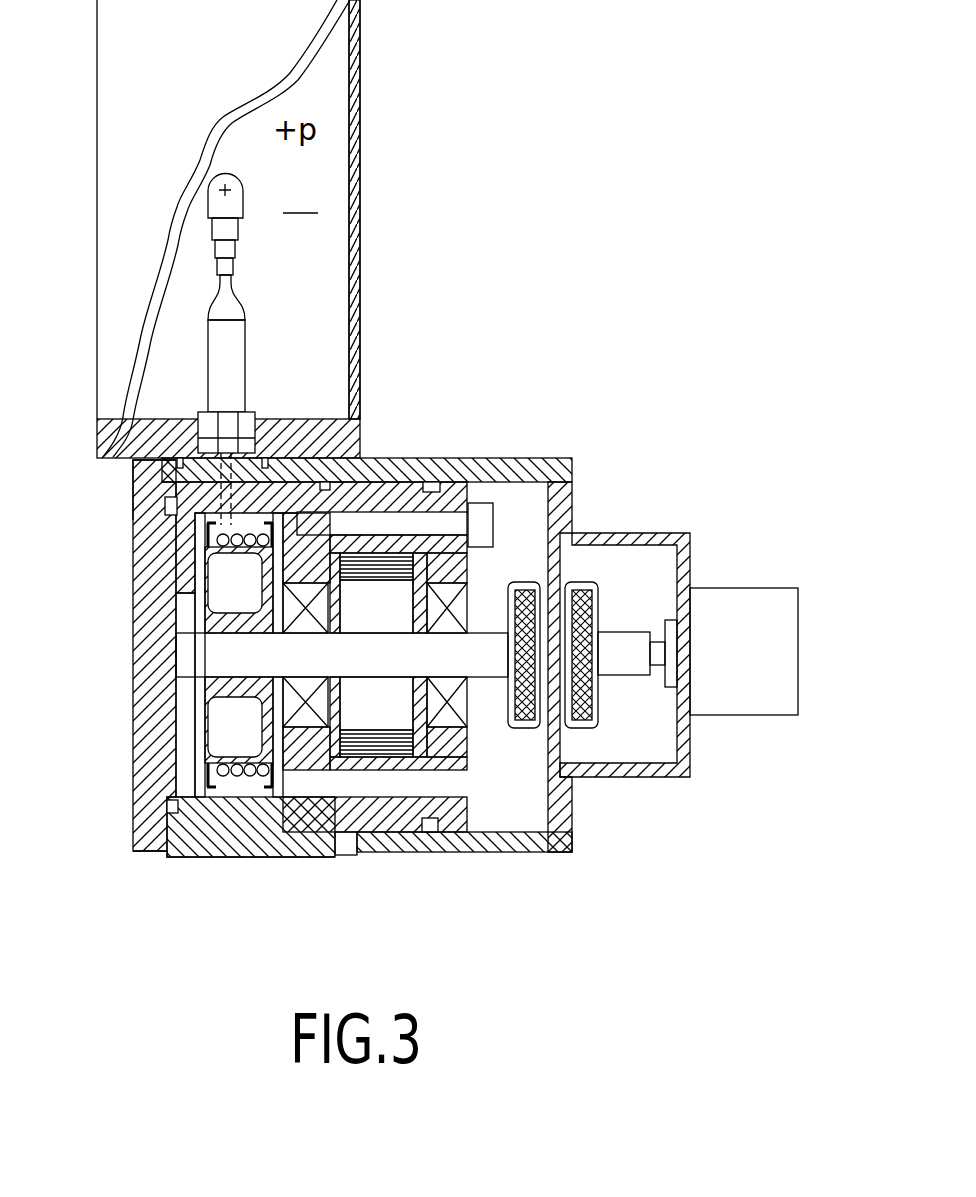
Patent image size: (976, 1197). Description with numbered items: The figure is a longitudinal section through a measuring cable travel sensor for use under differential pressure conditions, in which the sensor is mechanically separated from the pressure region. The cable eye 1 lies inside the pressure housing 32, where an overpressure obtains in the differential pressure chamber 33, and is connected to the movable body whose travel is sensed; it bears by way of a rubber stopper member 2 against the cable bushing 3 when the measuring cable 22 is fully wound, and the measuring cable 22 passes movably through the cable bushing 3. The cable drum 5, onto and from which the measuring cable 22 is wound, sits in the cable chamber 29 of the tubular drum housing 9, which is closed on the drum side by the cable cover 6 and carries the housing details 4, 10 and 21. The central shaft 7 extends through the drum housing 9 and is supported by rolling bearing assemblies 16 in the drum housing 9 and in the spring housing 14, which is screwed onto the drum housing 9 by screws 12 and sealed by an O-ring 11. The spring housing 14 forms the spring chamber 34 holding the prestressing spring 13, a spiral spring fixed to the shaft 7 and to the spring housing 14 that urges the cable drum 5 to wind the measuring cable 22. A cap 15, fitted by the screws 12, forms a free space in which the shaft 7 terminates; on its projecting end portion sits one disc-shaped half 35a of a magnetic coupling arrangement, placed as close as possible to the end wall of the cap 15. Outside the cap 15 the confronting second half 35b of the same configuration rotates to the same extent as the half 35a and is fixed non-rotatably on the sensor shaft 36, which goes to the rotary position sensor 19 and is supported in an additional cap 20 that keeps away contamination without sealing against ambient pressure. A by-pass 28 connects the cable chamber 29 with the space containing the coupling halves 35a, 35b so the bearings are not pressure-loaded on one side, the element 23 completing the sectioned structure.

The cable eye 1 is at (223, 205).
The rubber stopper member 2 is at (195, 360).
The cable bushing 3 is at (130, 418).
The housing 4 is at (160, 485).
The cable drum 5 is at (240, 697).
The cable cover 6 is at (152, 622).
The central shaft 7 is at (237, 650).
The drum housing 9 is at (188, 845).
The housing top plate 10 is at (253, 432).
The O-ring 11 is at (430, 480).
The screws 12 is at (480, 500).
The prestressing spring 13 is at (393, 703).
The spring housing 14 is at (458, 820).
The cap 15 is at (555, 470).
The rolling bearing assemblies 16 is at (413, 650).
The rotary position sensor 19 is at (782, 675).
The cap 20 is at (690, 730).
The connector 21 is at (165, 518).
The measuring cable 22 is at (187, 567).
The pressure chamber wall 23 is at (330, 240).
The by-pass 28 is at (345, 788).
The cable chamber 29 is at (253, 790).
The pressure housing 32 is at (358, 78).
The differential pressure chamber 33 is at (300, 194).
The spring chamber 34 is at (458, 743).
The half of magnetic coupling arrangement 35a is at (518, 582).
The second half of magnetic coupling arrangement 35b is at (600, 725).
The sensor shaft 36 is at (616, 628).